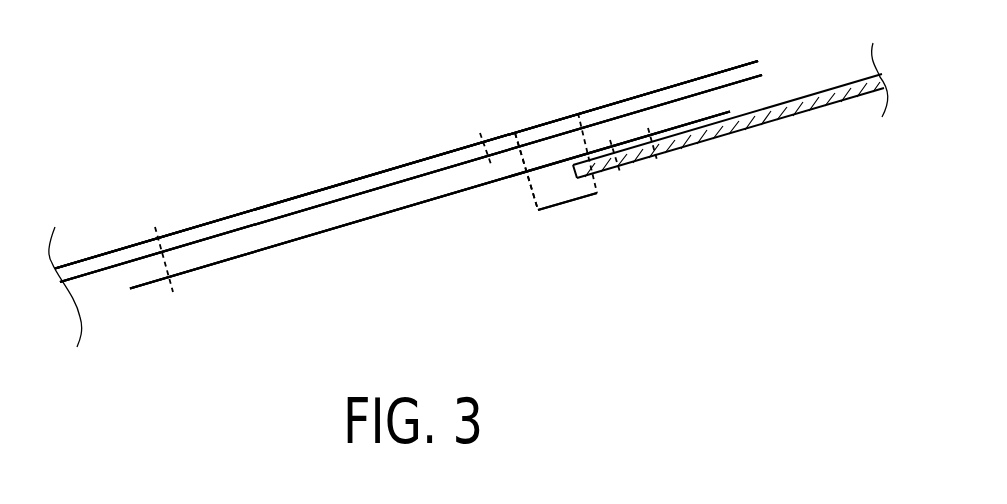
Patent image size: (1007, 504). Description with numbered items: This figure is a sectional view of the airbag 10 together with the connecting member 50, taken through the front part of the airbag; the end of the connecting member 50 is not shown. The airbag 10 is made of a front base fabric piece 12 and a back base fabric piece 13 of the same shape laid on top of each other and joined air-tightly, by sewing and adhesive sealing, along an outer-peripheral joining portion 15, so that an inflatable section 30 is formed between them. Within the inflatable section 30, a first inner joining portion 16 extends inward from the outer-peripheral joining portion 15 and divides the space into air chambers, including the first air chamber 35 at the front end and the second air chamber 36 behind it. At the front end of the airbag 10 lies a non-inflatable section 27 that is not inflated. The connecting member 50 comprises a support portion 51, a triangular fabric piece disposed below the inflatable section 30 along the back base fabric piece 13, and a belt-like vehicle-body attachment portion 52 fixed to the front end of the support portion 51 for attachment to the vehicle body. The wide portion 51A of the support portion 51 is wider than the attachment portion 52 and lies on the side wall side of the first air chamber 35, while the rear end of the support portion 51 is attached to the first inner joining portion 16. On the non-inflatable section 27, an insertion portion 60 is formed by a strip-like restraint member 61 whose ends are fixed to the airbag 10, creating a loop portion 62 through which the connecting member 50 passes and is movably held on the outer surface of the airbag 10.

The airbag 10 is at (249, 192).
The front base fabric piece 12 is at (85, 258).
The back base fabric piece 13 is at (105, 273).
The outer-peripheral joining portion 15 is at (482, 132).
The first inner joining portion 16 is at (157, 228).
The non-inflatable section 27 is at (607, 112).
The inflatable section 30 is at (320, 198).
The first air chamber 35 is at (385, 180).
The second air chamber 36 is at (130, 258).
The connecting member 50 is at (380, 215).
The support portion 51 is at (322, 233).
The wide portion 51A is at (250, 254).
The vehicle-body attachment portion 52 is at (790, 117).
The insertion portion 60 is at (557, 203).
The restraint member 61 is at (578, 198).
The loop portion 62 is at (538, 198).